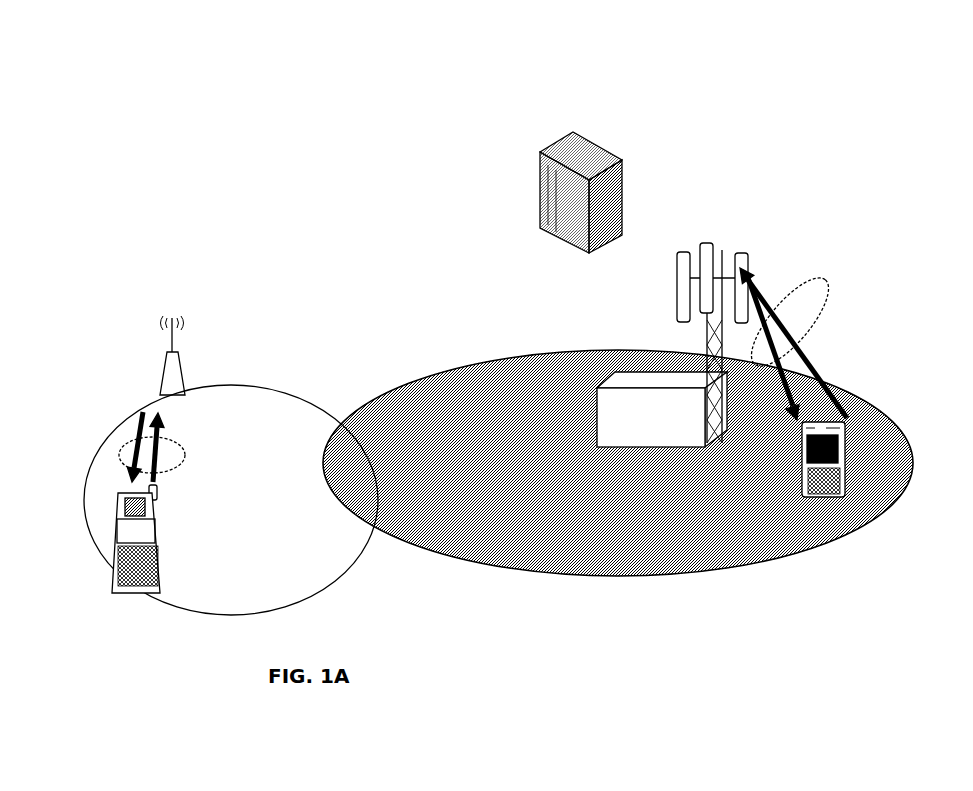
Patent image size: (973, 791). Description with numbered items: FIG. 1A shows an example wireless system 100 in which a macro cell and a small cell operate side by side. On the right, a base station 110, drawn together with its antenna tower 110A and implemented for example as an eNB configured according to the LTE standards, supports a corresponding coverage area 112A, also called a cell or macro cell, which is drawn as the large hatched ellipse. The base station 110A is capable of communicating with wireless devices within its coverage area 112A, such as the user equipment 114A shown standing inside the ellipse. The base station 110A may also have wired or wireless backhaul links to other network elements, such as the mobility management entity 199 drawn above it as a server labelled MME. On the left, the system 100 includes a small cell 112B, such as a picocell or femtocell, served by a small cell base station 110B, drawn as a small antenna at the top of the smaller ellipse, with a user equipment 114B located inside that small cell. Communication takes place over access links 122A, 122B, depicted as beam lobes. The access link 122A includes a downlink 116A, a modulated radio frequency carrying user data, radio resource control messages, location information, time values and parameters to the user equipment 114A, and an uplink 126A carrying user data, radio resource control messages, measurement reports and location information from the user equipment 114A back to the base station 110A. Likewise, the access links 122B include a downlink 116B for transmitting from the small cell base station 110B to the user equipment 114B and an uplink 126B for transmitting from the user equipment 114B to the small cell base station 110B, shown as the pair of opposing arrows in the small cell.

The system 100 is at (690, 34).
The mobility management entity 199 is at (625, 158).
The base station / eNodeB 110 is at (662, 409).
The base station 110A is at (773, 231).
The small cell base station 110B is at (223, 337).
The coverage area 112A is at (660, 577).
The small cell 112B is at (212, 613).
The user equipment 114A is at (890, 423).
The user equipment 114B is at (173, 567).
The downlink 116A is at (766, 390).
The downlink 116B is at (130, 476).
The access link 122A is at (823, 278).
The access links 122B is at (130, 450).
The uplink 126A is at (843, 383).
The uplink 126B is at (163, 433).